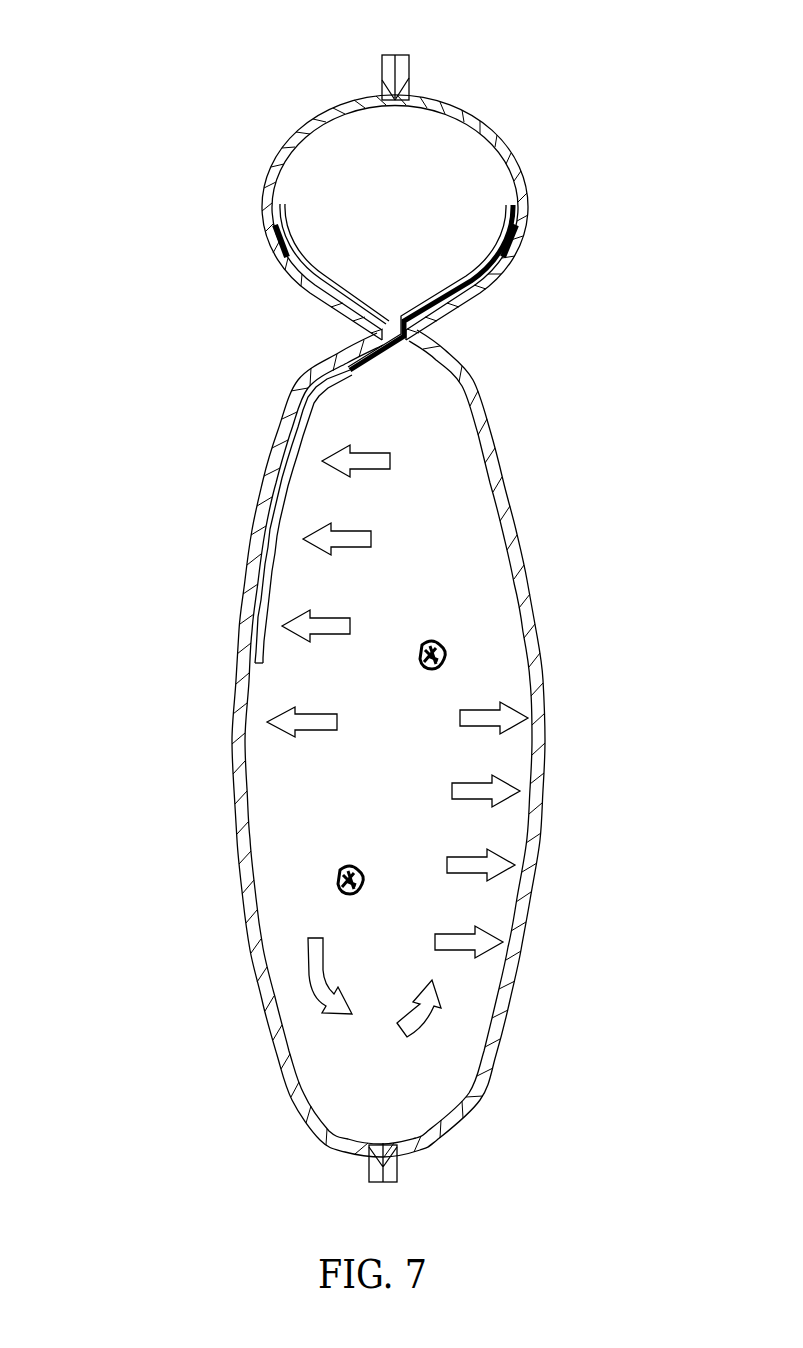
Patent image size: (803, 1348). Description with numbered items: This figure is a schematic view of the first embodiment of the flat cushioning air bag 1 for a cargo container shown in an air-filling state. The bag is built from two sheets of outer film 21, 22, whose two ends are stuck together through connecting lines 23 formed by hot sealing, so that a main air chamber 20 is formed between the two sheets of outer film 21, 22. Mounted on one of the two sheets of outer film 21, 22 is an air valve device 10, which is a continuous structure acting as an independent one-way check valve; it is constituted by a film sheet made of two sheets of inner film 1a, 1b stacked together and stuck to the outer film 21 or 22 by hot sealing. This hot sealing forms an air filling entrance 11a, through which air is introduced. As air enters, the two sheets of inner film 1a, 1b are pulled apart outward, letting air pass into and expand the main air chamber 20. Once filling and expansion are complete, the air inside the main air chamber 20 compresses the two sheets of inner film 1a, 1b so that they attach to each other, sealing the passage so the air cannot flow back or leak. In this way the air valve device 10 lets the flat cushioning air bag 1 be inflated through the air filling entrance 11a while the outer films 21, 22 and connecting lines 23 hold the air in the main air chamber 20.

The flat cushioning air bag 1 is at (62, 102).
The inner film 1a is at (292, 400).
The inner film 1b is at (326, 417).
The air valve device 10 is at (262, 507).
The air filling entrance 11a is at (362, 235).
The main air chamber 20 is at (438, 550).
The outer film 21 is at (238, 828).
The outer film 22 is at (530, 810).
The connecting line 23 is at (388, 68).